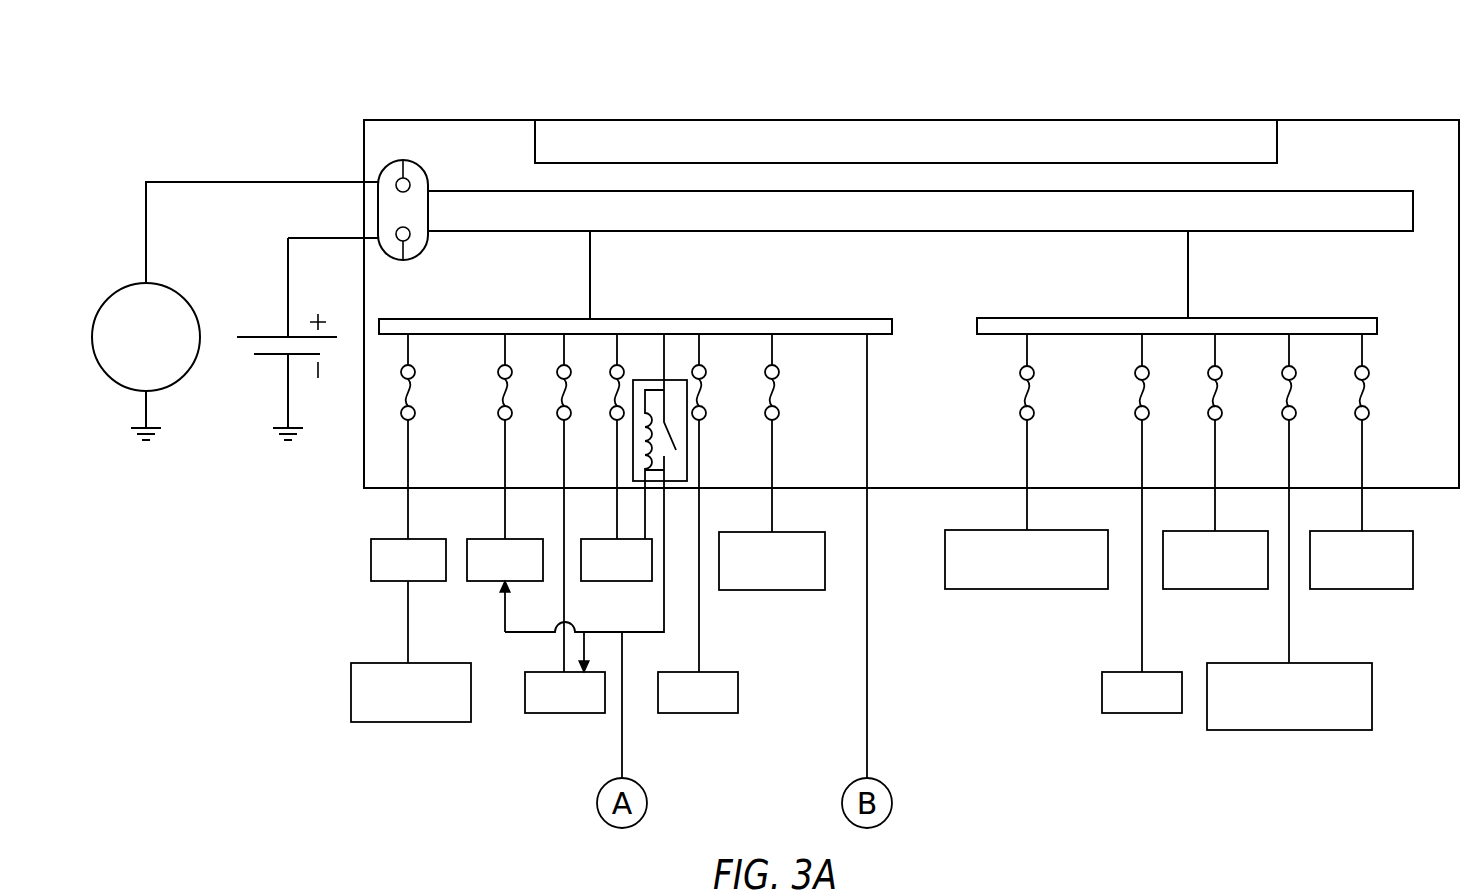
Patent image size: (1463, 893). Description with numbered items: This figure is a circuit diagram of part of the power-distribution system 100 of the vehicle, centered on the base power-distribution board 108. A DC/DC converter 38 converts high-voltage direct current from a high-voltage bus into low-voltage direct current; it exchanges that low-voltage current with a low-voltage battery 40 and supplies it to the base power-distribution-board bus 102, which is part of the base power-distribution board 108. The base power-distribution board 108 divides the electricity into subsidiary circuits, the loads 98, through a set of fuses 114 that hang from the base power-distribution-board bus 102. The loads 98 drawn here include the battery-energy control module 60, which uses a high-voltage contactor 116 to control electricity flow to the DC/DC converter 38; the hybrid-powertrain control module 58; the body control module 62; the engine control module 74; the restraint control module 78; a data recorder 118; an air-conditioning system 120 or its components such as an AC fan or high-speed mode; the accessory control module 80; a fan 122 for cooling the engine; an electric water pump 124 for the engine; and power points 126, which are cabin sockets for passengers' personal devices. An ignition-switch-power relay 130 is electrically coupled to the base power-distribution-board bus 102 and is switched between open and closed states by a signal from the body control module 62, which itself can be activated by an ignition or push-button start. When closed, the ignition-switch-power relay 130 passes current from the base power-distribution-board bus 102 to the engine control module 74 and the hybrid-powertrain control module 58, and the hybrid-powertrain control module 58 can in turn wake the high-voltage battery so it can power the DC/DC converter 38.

The DC/DC converter 38 is at (109, 296).
The low-voltage battery 40 is at (262, 356).
The hybrid-powertrain control module 58 is at (490, 581).
The battery-energy control module 60 is at (385, 581).
The body control module 62 is at (618, 581).
The engine control module 74 is at (549, 713).
The restraint control module 78 is at (686, 713).
The accessory control module 80 is at (1127, 713).
The loads 98 is at (291, 578).
The power-distribution system 100 is at (952, 84).
The base power-distribution-board bus 102 is at (1356, 191).
The base power-distribution board 108 is at (1392, 120).
The fuses 114 is at (776, 383).
The high-voltage contactor 116 is at (370, 722).
The data recorder 118 is at (797, 590).
The air-conditioning system 120 is at (963, 589).
The fan 122 is at (1207, 589).
The electric water pump 124 is at (1240, 730).
The power points 126 is at (1355, 589).
The ignition-switch-power relay 130 is at (688, 470).